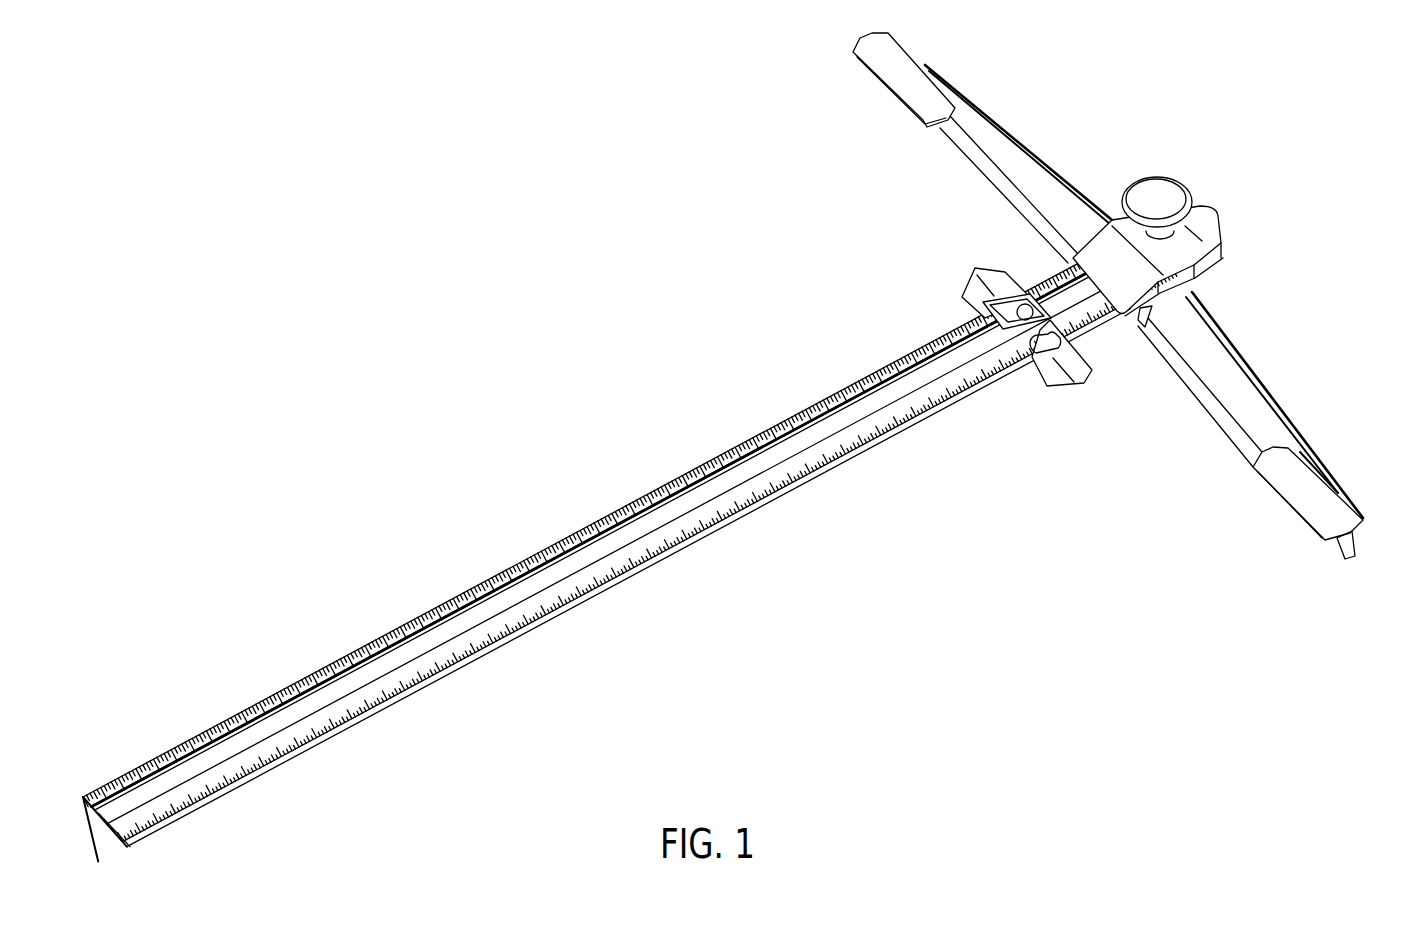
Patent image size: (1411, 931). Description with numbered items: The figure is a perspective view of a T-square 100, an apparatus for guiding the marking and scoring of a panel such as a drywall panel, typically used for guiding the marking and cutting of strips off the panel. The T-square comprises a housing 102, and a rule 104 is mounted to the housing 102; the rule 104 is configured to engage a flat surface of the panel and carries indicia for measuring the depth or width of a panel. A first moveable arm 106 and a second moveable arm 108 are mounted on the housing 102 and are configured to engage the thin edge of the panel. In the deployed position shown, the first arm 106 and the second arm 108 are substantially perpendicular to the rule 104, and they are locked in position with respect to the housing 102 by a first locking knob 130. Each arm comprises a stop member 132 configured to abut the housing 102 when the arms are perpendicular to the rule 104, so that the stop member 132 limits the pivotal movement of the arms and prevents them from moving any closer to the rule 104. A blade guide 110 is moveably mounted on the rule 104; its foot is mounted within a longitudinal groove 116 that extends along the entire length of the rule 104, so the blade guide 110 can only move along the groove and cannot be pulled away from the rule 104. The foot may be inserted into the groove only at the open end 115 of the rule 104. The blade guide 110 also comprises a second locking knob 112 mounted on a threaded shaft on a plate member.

The T-square 100 is at (353, 254).
The housing 102 is at (1210, 226).
The rule 104 is at (491, 624).
The first moveable arm 106 is at (917, 53).
The second moveable arm 108 is at (1362, 527).
The blade guide 110 is at (965, 296).
The second locking knob 112 is at (1022, 333).
The open end 115 is at (100, 827).
The longitudinal groove 116 is at (306, 703).
The first locking knob 130 is at (1157, 190).
The stop member 132 is at (1137, 323).